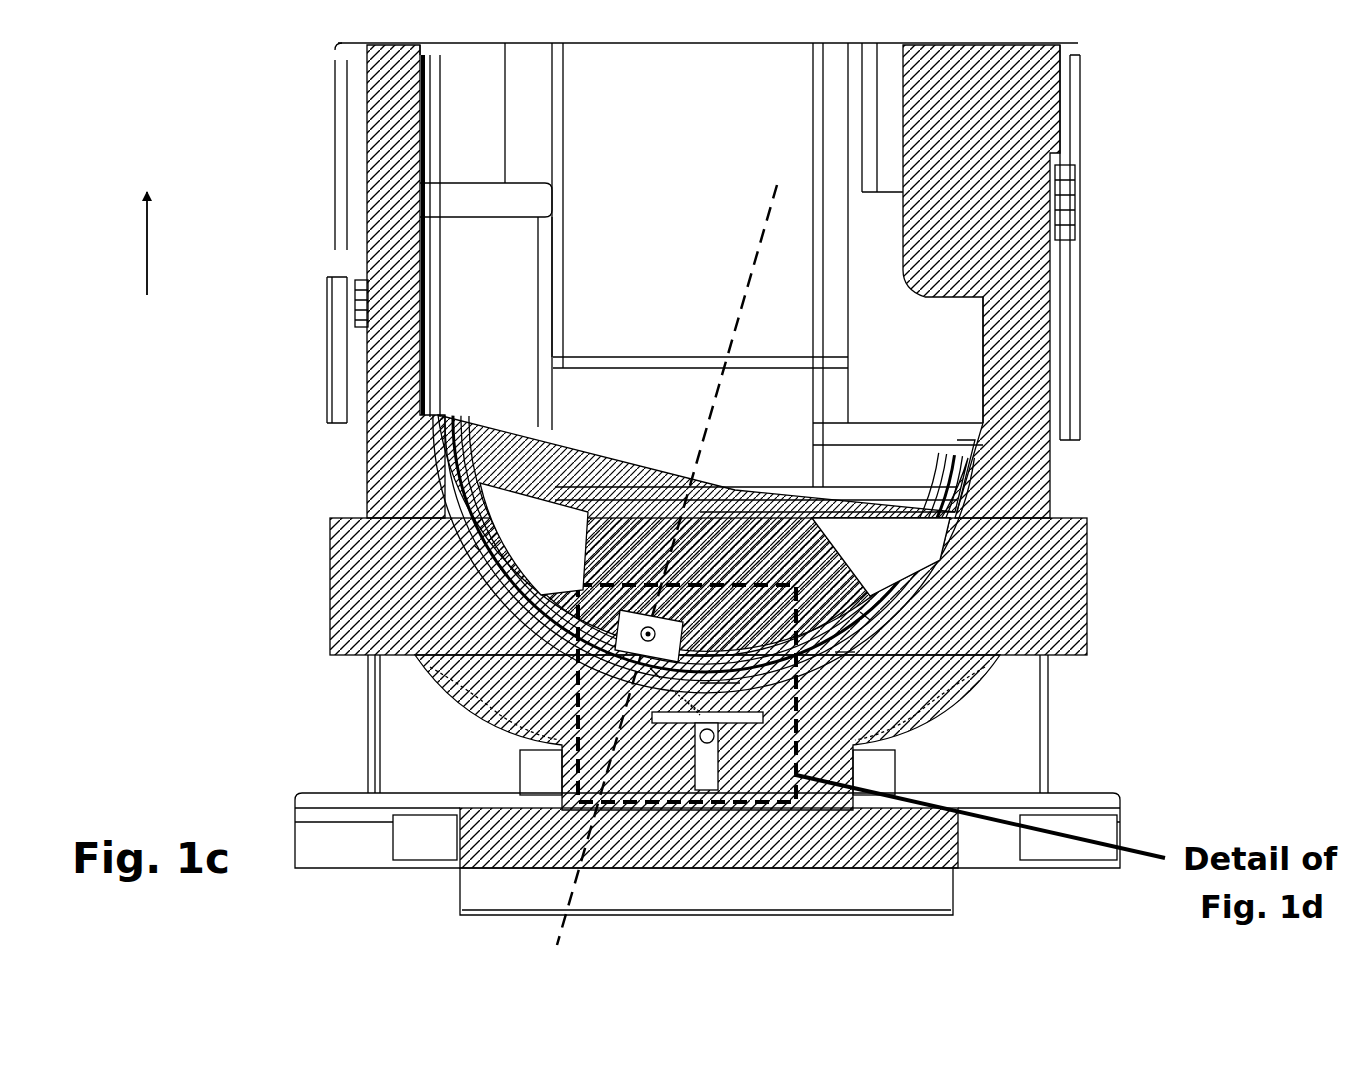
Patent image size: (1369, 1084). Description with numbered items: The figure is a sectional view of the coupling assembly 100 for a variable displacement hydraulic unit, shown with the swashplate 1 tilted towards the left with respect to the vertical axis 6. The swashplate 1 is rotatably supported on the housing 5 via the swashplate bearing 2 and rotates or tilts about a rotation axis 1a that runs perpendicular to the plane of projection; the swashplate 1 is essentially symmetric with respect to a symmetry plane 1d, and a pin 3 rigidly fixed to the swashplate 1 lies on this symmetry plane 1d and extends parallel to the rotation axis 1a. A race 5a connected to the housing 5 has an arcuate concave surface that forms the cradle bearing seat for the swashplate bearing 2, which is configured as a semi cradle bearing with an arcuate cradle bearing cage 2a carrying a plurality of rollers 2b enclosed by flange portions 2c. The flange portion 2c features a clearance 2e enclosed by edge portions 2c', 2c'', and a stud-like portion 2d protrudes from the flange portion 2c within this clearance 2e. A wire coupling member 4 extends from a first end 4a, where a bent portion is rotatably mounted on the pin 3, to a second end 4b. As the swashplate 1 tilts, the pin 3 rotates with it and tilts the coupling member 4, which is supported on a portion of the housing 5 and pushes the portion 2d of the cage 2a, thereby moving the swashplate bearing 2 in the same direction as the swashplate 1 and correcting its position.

The swashplate 1 is at (975, 450).
The rotation axis 1a is at (703, 435).
The symmetry plane 1d is at (757, 232).
The swashplate bearing 2 is at (905, 590).
The cradle bearing cage 2a is at (865, 615).
The rollers 2b is at (538, 615).
The flange portion 2c is at (439, 689).
The edge portion 2c' is at (560, 571).
The edge portion 2c'' is at (881, 476).
The portion of the cage 2d is at (668, 684).
The clearance 2e is at (713, 680).
The pin 3 is at (652, 630).
The coupling member 4 is at (712, 700).
The first end 4a is at (640, 605).
The second end 4b is at (709, 752).
The housing 5 is at (1015, 610).
The race 5a is at (845, 650).
The vertical axis 6 is at (147, 250).
The coupling assembly 100 is at (325, 716).